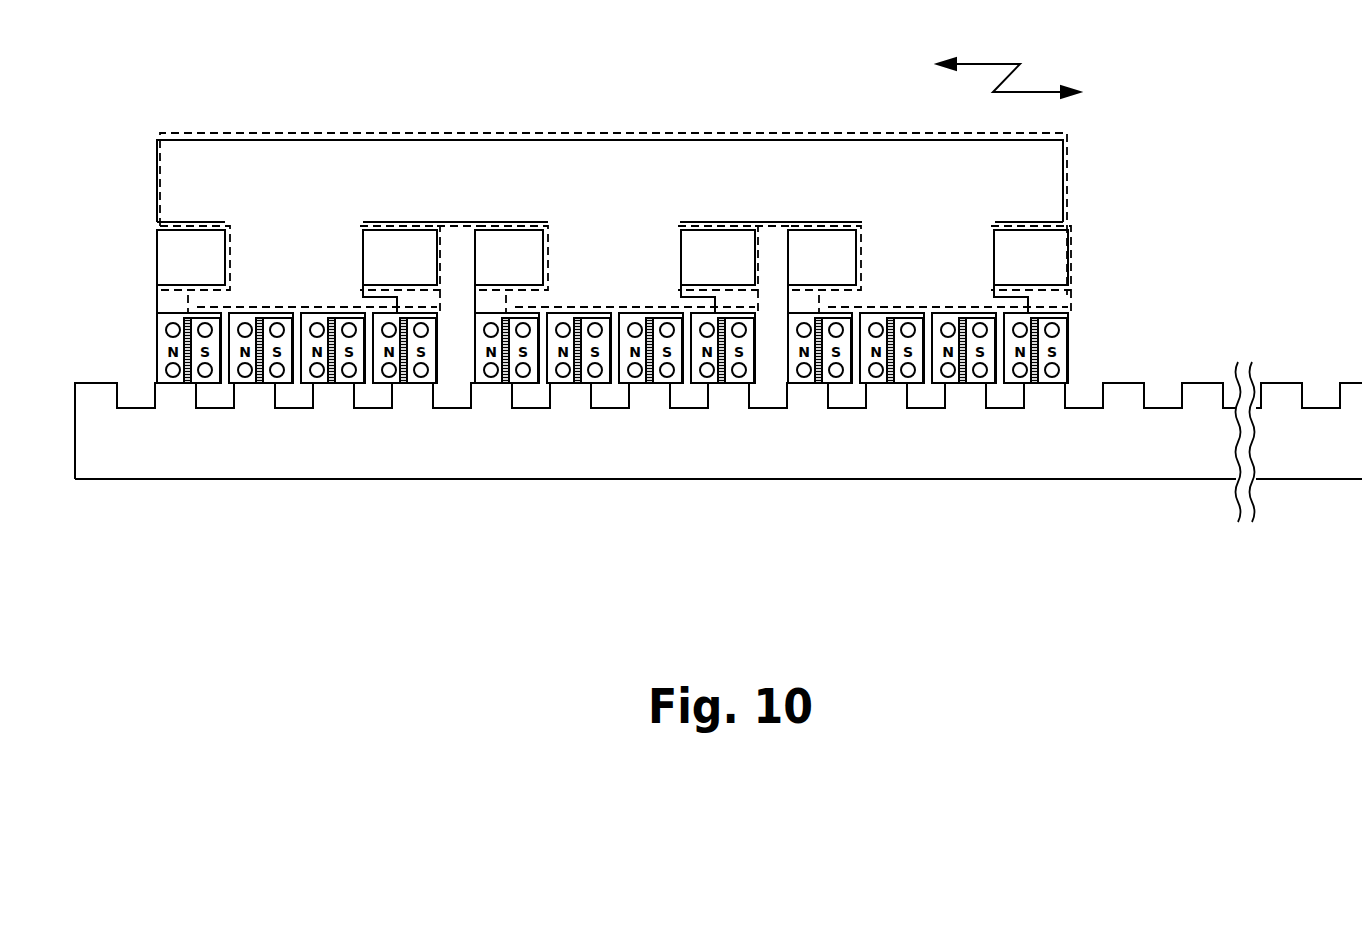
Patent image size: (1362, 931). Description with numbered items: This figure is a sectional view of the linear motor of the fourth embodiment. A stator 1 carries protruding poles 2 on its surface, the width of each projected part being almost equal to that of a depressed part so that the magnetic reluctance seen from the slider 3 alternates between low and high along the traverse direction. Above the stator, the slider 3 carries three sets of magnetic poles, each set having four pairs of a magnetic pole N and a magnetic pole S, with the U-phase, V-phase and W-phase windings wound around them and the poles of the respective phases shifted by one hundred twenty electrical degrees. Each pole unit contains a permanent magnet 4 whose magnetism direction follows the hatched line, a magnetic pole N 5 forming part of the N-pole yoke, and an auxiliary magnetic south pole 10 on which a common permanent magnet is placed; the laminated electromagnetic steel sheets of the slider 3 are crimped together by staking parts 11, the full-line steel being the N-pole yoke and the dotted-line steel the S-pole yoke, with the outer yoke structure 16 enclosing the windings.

The stator 1 is at (650, 455).
The protruding pole 2 is at (410, 397).
The slider 3 is at (697, 186).
The permanent magnet 4 is at (330, 385).
The magnetic pole N 5 is at (307, 385).
The auxiliary magnetic south pole 10 is at (357, 385).
The staking part 11 is at (203, 385).
The mover yoke 16 is at (517, 232).